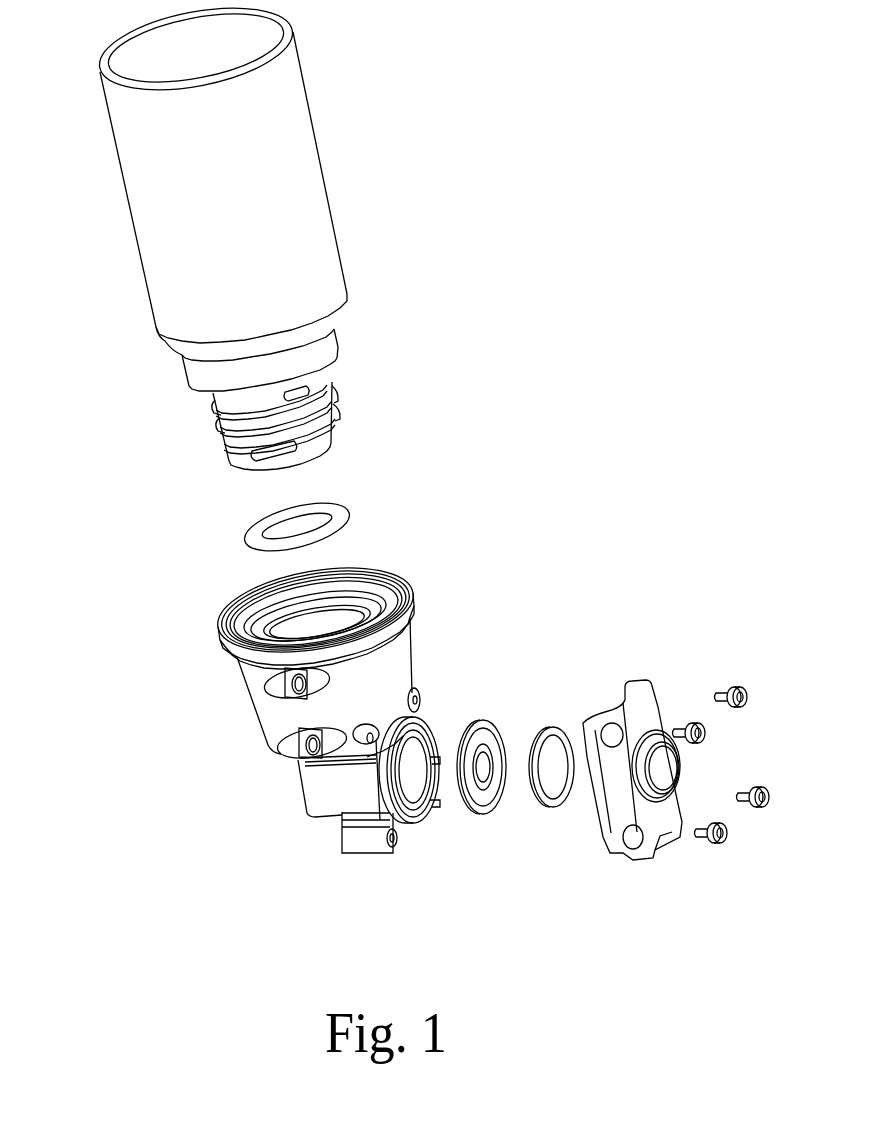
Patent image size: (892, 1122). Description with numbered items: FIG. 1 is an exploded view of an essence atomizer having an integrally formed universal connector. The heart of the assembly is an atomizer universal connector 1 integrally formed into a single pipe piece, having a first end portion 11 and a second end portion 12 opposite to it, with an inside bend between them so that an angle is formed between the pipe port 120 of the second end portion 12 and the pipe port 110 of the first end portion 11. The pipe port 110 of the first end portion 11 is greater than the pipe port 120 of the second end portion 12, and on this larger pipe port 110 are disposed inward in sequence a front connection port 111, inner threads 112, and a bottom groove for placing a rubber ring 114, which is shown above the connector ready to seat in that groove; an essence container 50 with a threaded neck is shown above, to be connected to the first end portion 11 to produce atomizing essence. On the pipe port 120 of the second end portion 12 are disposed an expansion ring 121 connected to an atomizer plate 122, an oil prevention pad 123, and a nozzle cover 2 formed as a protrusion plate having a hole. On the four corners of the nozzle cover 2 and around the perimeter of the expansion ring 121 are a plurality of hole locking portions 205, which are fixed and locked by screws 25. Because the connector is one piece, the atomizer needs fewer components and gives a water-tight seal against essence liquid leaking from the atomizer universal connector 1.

The atomizer universal connector 1 is at (308, 687).
The nozzle cover 2 is at (647, 708).
The first end portion 11 is at (308, 620).
The second end portion 12 is at (317, 800).
The screws 25 is at (720, 844).
The essence container 50 is at (330, 272).
The pipe port 110 is at (308, 573).
The front connection port 111 is at (348, 592).
The inner threads 112 is at (328, 628).
The rubber ring 114 is at (262, 527).
The pipe port 120 is at (418, 790).
The expansion ring 121 is at (433, 766).
The atomizer plate 122 is at (490, 795).
The oil prevention pad 123 is at (553, 728).
The hole locking portions 205 is at (393, 833).